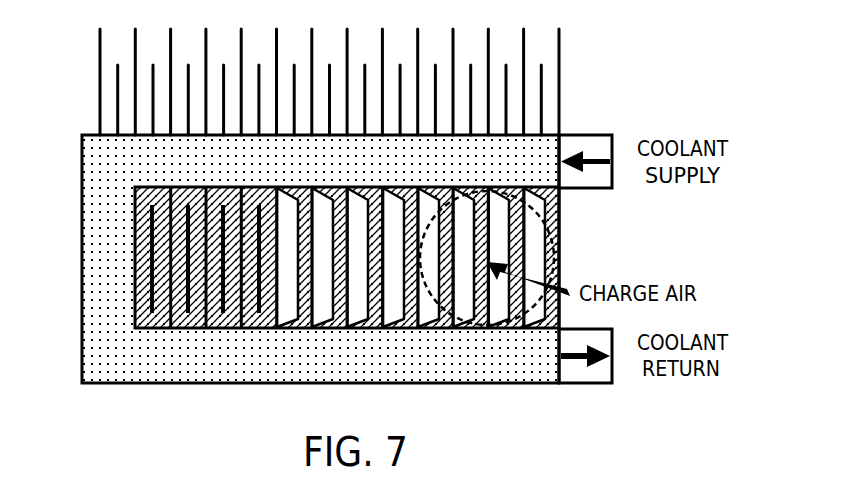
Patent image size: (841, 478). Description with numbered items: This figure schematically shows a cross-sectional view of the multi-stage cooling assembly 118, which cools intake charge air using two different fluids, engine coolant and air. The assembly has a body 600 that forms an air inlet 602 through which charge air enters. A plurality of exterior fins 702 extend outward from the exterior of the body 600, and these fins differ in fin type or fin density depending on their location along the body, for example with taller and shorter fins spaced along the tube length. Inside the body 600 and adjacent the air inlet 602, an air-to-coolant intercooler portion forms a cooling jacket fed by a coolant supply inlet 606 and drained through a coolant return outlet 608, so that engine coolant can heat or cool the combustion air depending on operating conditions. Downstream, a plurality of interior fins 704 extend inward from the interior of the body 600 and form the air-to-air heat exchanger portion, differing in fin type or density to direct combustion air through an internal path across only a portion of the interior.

The multi-stage cooling assembly 118 is at (673, 35).
The body 600 is at (82, 255).
The air inlet 602 is at (559, 230).
The coolant supply inlet 606 is at (600, 134).
The coolant return outlet 608 is at (594, 384).
The exterior fins 702 is at (559, 58).
The interior fins 704 is at (152, 238).